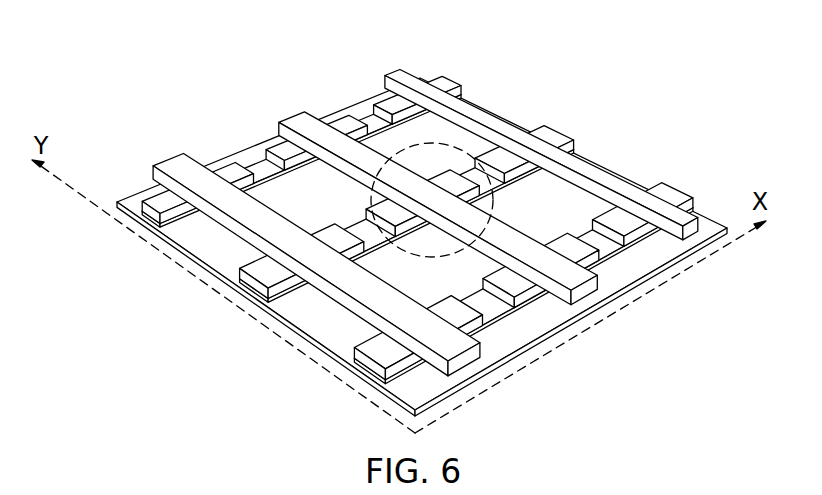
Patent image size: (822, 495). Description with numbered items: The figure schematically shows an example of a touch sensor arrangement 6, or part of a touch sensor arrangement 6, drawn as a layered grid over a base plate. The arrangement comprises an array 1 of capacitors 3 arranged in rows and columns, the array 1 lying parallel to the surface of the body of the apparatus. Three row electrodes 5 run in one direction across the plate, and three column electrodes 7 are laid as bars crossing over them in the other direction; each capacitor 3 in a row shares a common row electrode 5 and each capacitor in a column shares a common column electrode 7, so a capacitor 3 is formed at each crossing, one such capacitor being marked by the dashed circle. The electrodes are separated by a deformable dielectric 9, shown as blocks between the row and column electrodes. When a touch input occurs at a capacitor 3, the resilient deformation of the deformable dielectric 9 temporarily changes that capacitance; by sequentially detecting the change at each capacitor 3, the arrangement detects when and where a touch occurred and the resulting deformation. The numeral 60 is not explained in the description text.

The array 1 is at (465, 216).
The capacitor 3 is at (432, 193).
The row electrode 5 is at (267, 156).
The touch sensor arrangement 6 is at (465, 216).
The column electrode 7 is at (398, 67).
The deformable dielectric 9 is at (158, 202).
The base plate 60 is at (758, 304).